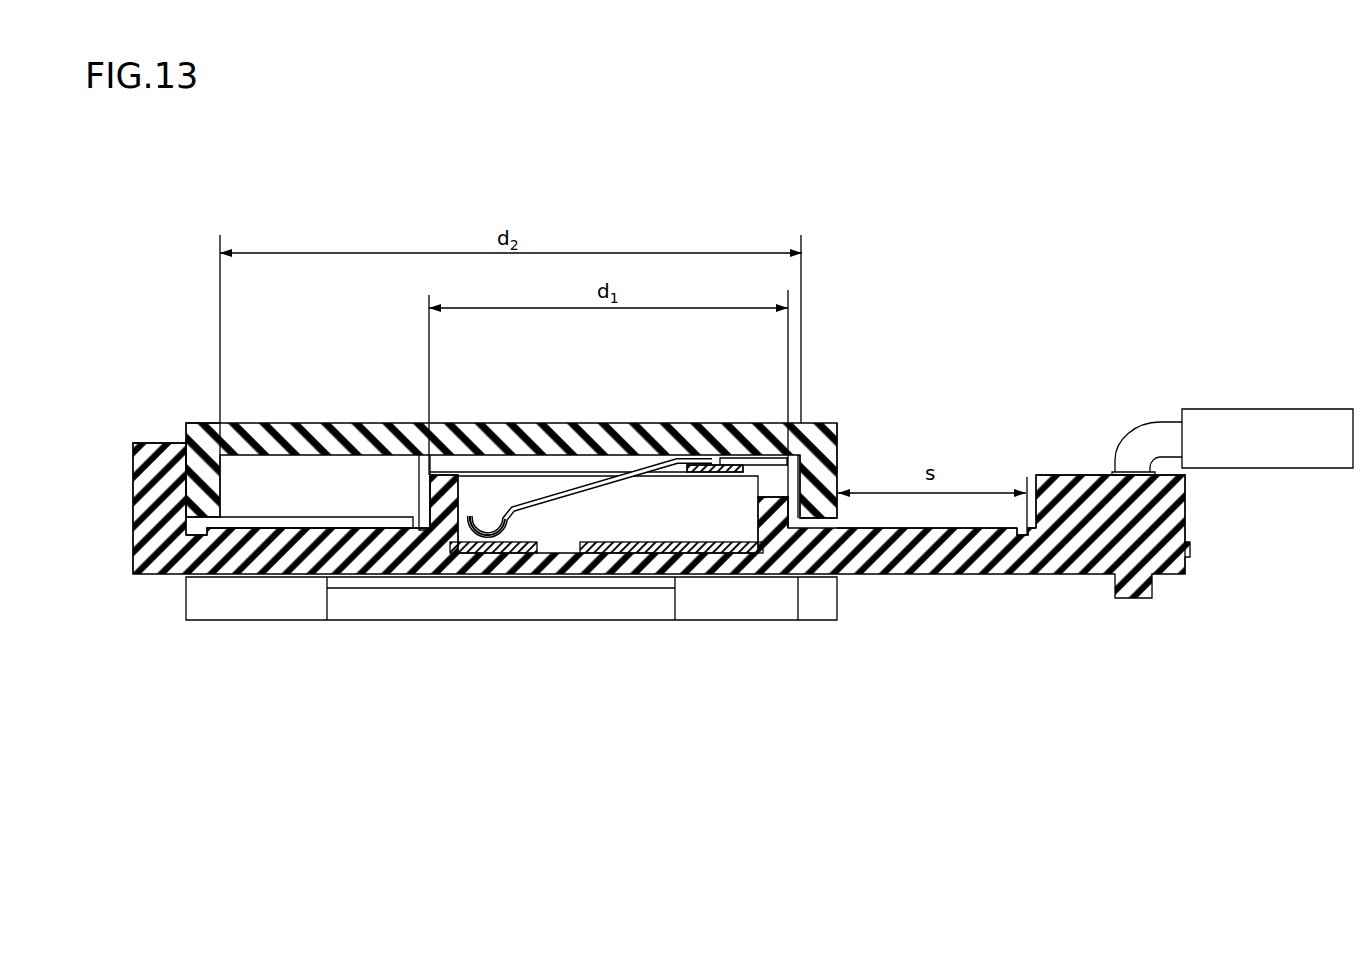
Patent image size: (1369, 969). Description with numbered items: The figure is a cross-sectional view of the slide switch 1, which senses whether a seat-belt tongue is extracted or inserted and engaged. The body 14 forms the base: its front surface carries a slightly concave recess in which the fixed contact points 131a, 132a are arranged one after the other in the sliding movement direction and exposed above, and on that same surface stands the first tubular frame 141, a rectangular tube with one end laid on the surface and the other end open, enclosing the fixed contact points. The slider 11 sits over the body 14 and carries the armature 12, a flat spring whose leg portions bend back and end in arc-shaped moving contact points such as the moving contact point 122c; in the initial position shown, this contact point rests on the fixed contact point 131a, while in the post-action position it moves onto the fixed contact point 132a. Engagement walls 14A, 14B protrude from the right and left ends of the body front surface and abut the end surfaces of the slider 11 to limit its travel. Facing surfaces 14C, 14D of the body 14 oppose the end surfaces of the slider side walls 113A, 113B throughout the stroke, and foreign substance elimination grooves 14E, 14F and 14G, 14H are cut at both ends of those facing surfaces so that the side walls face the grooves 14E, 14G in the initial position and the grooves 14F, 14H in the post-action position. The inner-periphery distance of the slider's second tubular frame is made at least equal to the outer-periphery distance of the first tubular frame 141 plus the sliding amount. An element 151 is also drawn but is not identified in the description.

The slide switch 1 is at (1241, 280).
The slider 11 is at (441, 422).
The armature 12 is at (677, 460).
The body 14 is at (147, 587).
The engagement wall 14A is at (138, 458).
The engagement wall 14B is at (1052, 480).
The facing surface 14C is at (254, 527).
The facing surface 14D is at (887, 530).
The foreign substance elimination groove 14E is at (192, 532).
The foreign substance elimination groove 14F is at (418, 532).
The foreign substance elimination groove 14G is at (800, 540).
The foreign substance elimination groove 14H is at (1032, 535).
The side wall 113A is at (186, 470).
The side wall 113B is at (837, 467).
The moving contact point 122c is at (462, 545).
The fixed contact point 131a is at (512, 555).
The fixed contact point 132a is at (641, 555).
The first tubular frame 141 is at (460, 490).
The cable connector 151 is at (1328, 403).